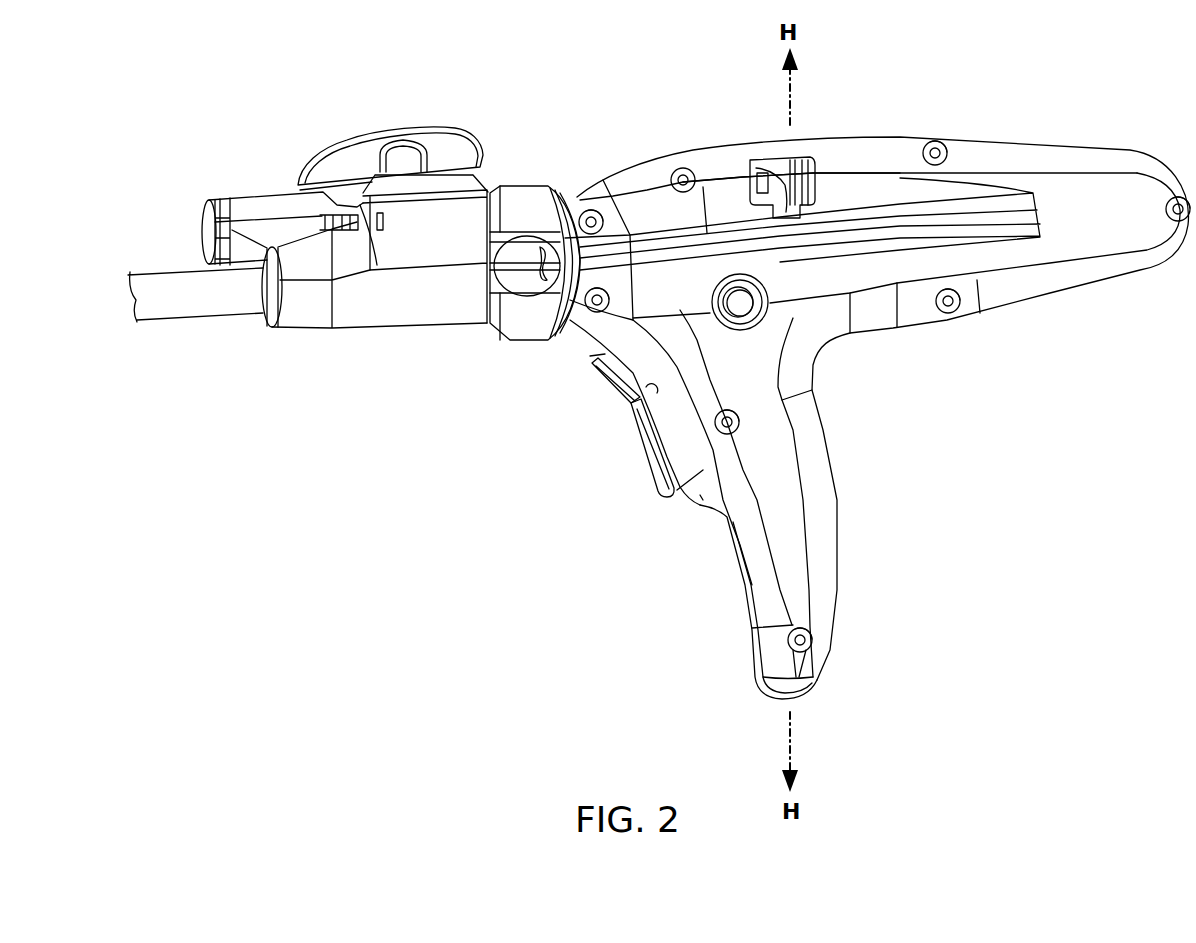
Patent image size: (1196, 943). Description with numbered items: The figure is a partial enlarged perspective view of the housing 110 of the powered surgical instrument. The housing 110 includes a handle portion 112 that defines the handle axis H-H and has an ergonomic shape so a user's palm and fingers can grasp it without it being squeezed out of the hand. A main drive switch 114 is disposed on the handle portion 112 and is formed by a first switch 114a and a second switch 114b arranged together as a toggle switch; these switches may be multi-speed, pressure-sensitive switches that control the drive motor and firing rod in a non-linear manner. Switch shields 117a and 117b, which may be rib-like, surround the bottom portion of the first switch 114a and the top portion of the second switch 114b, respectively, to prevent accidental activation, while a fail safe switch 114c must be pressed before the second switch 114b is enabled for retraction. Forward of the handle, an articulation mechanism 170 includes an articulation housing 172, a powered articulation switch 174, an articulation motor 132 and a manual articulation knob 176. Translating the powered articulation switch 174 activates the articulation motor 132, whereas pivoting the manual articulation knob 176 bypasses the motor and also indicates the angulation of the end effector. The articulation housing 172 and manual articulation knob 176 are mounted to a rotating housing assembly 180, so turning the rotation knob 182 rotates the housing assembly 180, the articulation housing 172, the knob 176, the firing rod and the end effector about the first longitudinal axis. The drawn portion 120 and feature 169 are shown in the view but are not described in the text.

The housing 110 is at (1103, 219).
The handle portion 112 is at (827, 513).
The main drive switch 114 is at (603, 431).
The first switch 114a is at (657, 480).
The second switch 114b is at (603, 382).
The fail safe switch 114c is at (740, 306).
The switch shield 117a is at (588, 360).
The switch shield 117b is at (702, 493).
The housing 120 is at (849, 395).
The articulation motor 132 is at (246, 197).
The housing seam 169 is at (817, 140).
The articulation mechanism 170 is at (393, 122).
The articulation housing 172 is at (372, 315).
The powered articulation switch 174 is at (766, 158).
The manual articulation knob 176 is at (354, 142).
The rotating housing assembly 180 is at (538, 172).
The rotation knob 182 is at (503, 198).